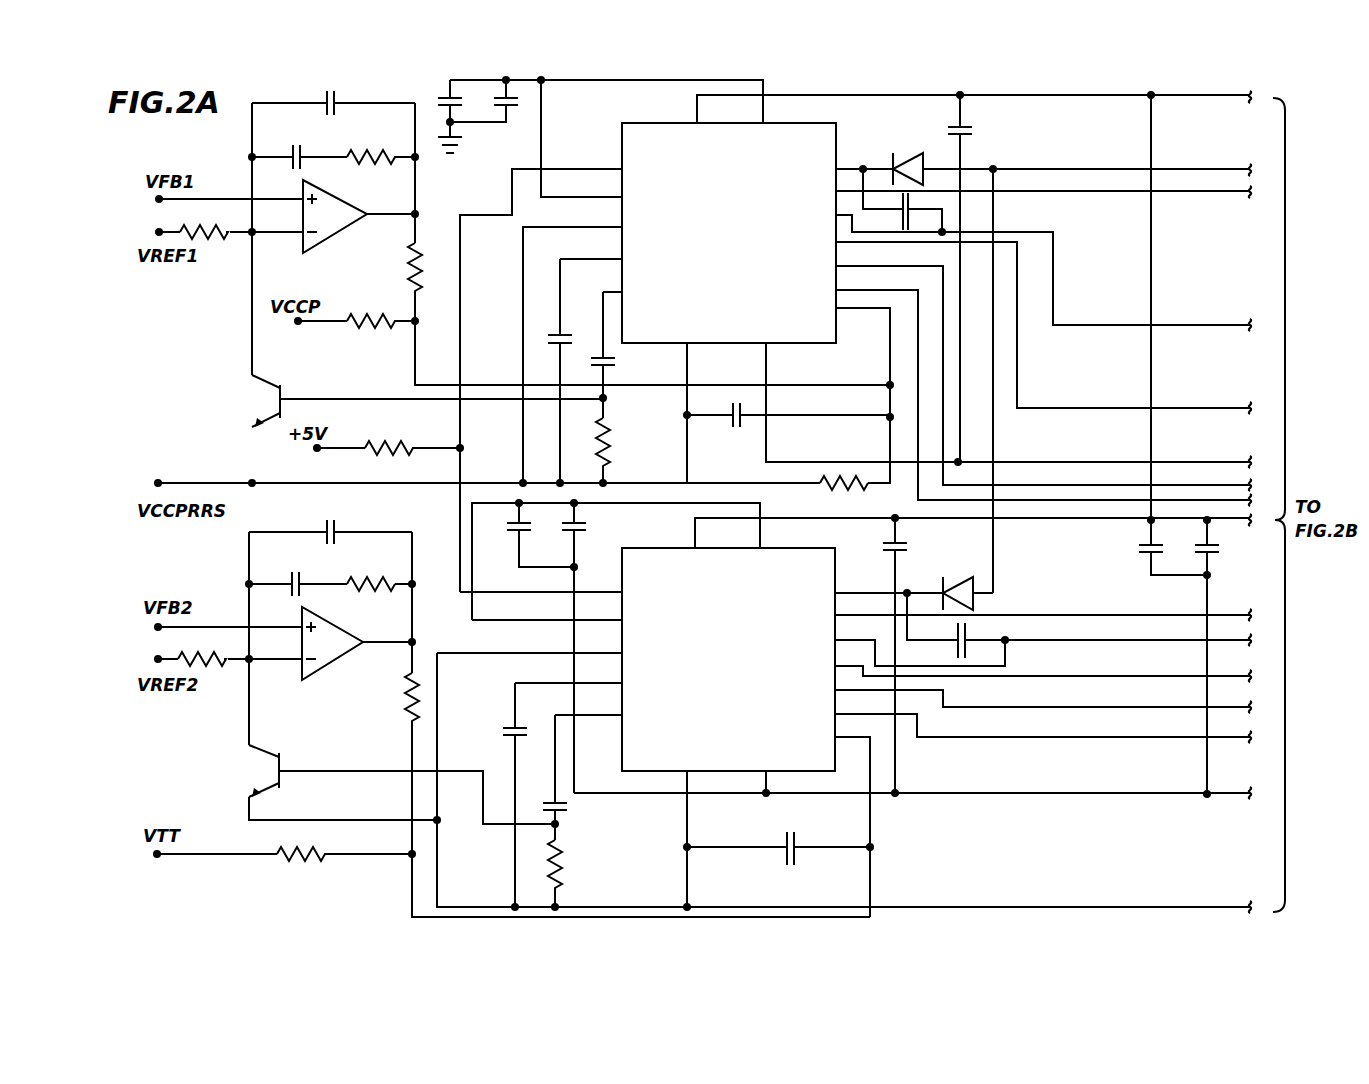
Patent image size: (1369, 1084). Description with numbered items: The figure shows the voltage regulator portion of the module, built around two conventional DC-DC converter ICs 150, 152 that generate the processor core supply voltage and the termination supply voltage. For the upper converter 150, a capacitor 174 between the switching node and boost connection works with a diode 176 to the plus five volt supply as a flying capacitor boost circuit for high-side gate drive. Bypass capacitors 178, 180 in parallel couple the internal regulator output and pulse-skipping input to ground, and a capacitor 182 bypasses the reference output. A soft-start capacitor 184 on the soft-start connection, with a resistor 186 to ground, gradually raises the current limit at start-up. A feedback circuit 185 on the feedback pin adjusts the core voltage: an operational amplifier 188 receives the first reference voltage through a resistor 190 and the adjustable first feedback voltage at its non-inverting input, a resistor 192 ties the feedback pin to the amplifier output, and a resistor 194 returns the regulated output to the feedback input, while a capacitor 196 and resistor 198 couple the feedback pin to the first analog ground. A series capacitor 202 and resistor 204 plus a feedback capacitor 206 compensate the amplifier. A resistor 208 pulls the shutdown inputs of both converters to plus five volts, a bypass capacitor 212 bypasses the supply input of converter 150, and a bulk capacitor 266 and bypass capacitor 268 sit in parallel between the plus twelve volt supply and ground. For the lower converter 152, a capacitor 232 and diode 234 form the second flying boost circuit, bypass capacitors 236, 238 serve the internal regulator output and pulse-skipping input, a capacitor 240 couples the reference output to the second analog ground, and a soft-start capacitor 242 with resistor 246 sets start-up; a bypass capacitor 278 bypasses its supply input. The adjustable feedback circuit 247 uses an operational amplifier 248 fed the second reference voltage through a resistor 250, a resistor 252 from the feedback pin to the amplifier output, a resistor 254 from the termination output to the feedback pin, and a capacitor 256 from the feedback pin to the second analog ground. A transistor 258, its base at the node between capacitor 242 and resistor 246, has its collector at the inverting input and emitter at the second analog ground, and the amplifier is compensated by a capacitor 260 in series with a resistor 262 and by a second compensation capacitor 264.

The DC-DC converter IC 150 is at (668, 122).
The DC-DC converter IC 152 is at (672, 547).
The capacitor 174 is at (896, 206).
The diode 176 is at (930, 157).
The bypass capacitor 178 is at (442, 100).
The bypass capacitor 180 is at (512, 108).
The capacitor 182 is at (552, 335).
The capacitor 184 is at (612, 362).
The feedback circuit 185 is at (418, 208).
The resistor 186 is at (610, 440).
The operational amplifier 188 is at (338, 194).
The resistor 190 is at (213, 238).
The resistor 192 is at (410, 258).
The resistor 194 is at (382, 328).
The capacitor 196 is at (738, 425).
The resistor 198 is at (840, 488).
The capacitor 202 is at (298, 147).
The resistor 204 is at (370, 150).
The feedback capacitor 206 is at (322, 100).
The resistor 208 is at (370, 443).
The bypass capacitor 212 is at (968, 128).
The capacitor 232 is at (968, 625).
The diode 234 is at (963, 577).
The bypass capacitor 236 is at (512, 523).
The bypass capacitor 238 is at (586, 524).
The capacitor 240 is at (505, 722).
The soft-start timing capacitor 242 is at (570, 808).
The resistor 246 is at (568, 870).
The adjustable feedback circuit 247 is at (418, 656).
The operational amplifier 248 is at (331, 665).
The resistor 250 is at (215, 665).
The resistor 252 is at (408, 695).
The resistor 254 is at (300, 860).
The capacitor 256 is at (795, 838).
The transistor 258 is at (262, 773).
The capacitor 260 is at (290, 577).
The resistor 262 is at (375, 580).
The compensation capacitor 264 is at (333, 530).
The bulk capacitor 266 is at (1140, 553).
The bypass capacitor 268 is at (1200, 552).
The bypass capacitor 278 is at (885, 543).